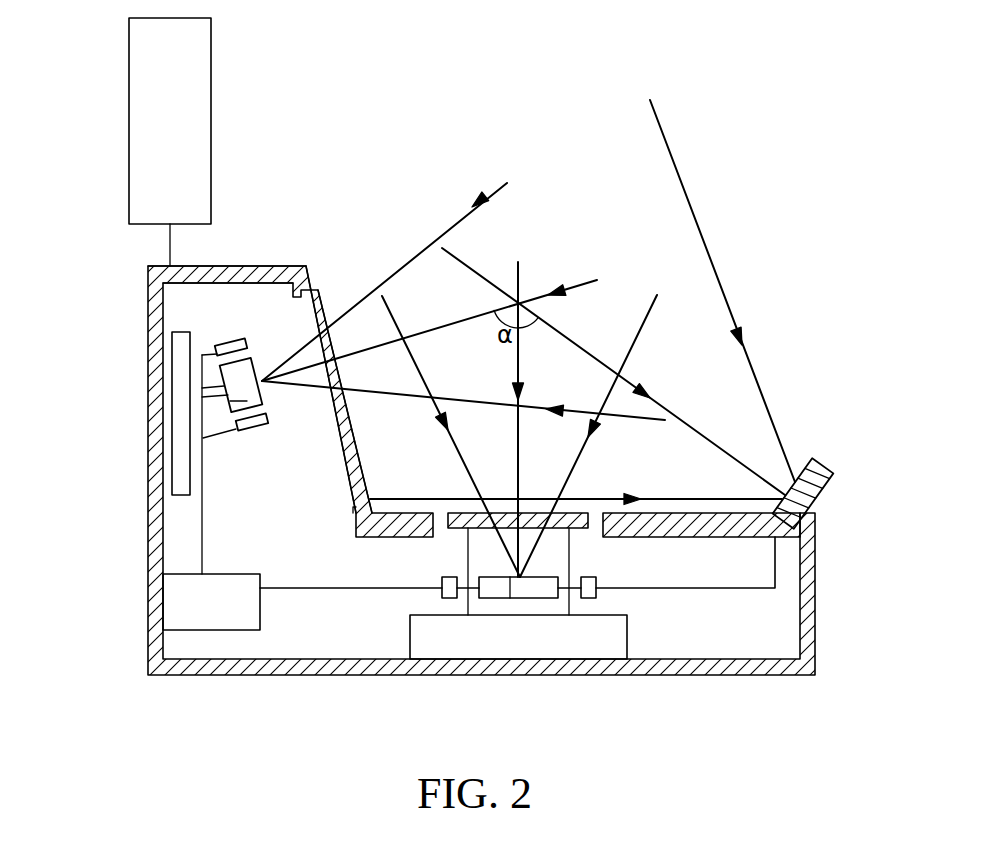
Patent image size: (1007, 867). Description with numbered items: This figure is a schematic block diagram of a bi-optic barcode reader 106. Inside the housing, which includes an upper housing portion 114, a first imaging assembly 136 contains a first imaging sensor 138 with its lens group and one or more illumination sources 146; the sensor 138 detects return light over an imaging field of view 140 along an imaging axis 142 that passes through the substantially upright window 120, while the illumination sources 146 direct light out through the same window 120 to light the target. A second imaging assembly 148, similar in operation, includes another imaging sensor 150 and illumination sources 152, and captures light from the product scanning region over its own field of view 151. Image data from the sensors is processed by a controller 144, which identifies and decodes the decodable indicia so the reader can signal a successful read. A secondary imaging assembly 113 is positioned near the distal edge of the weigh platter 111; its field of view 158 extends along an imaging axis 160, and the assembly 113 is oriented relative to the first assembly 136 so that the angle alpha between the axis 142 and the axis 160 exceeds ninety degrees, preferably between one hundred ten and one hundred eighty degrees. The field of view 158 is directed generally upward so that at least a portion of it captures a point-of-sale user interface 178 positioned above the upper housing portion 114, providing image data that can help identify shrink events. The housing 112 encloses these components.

The barcode reader 106 is at (137, 247).
The weigh platter 111 is at (678, 523).
The housing 112 is at (816, 594).
The secondary imaging assembly 113 is at (828, 460).
The upper housing portion 114 is at (262, 266).
The substantially upright window 120 is at (322, 300).
The first imaging assembly 136 is at (247, 401).
The first imaging sensor 138 is at (247, 382).
The imaging field of view 140 is at (457, 220).
The imaging axis 142 is at (428, 331).
The controller 144 is at (172, 607).
The illumination sources 146 is at (226, 342).
The imaging assembly 148 is at (540, 598).
The imaging sensor 150 is at (517, 598).
The field of view 151 is at (637, 333).
The illumination sources 152 is at (440, 578).
The imaging field of view 158 is at (683, 183).
The imaging axis 160 is at (463, 258).
The point-of-sale user interface 178 is at (129, 122).